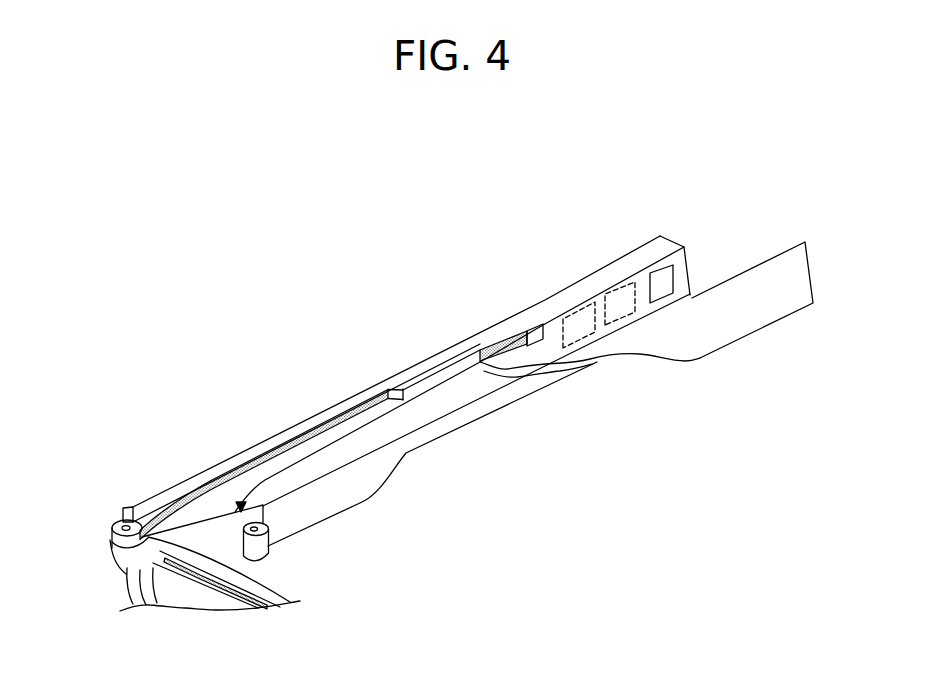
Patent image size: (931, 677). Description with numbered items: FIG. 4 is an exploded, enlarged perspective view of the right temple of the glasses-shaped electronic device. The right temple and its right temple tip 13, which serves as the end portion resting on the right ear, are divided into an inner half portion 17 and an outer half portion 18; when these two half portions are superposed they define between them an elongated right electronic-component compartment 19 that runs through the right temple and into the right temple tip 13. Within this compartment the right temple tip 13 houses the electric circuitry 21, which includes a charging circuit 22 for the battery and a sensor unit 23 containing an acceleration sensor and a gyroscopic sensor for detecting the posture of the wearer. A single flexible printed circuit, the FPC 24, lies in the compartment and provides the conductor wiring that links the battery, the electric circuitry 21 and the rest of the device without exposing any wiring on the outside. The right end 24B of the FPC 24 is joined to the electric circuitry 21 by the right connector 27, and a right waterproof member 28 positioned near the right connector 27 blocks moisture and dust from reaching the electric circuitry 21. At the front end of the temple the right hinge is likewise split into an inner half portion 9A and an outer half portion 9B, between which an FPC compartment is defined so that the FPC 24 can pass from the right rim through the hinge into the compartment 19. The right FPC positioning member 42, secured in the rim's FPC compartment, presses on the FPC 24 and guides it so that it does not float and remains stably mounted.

The inner half portion 9A is at (270, 542).
The outer half portion 9B is at (126, 508).
The right temple tip 13 is at (593, 277).
The inner half portion 17 is at (398, 457).
The outer half portion 18 is at (333, 406).
The right electronic-component compartment 19 is at (241, 503).
The electric circuitry 21 is at (600, 355).
The charging circuit 22 is at (578, 310).
The sensor unit 23 is at (625, 284).
The flexible printed circuit 24 is at (267, 455).
The right end 24B is at (512, 333).
The right connector 27 is at (537, 328).
The right waterproof member 28 is at (443, 373).
The right FPC positioning member 42 is at (118, 550).